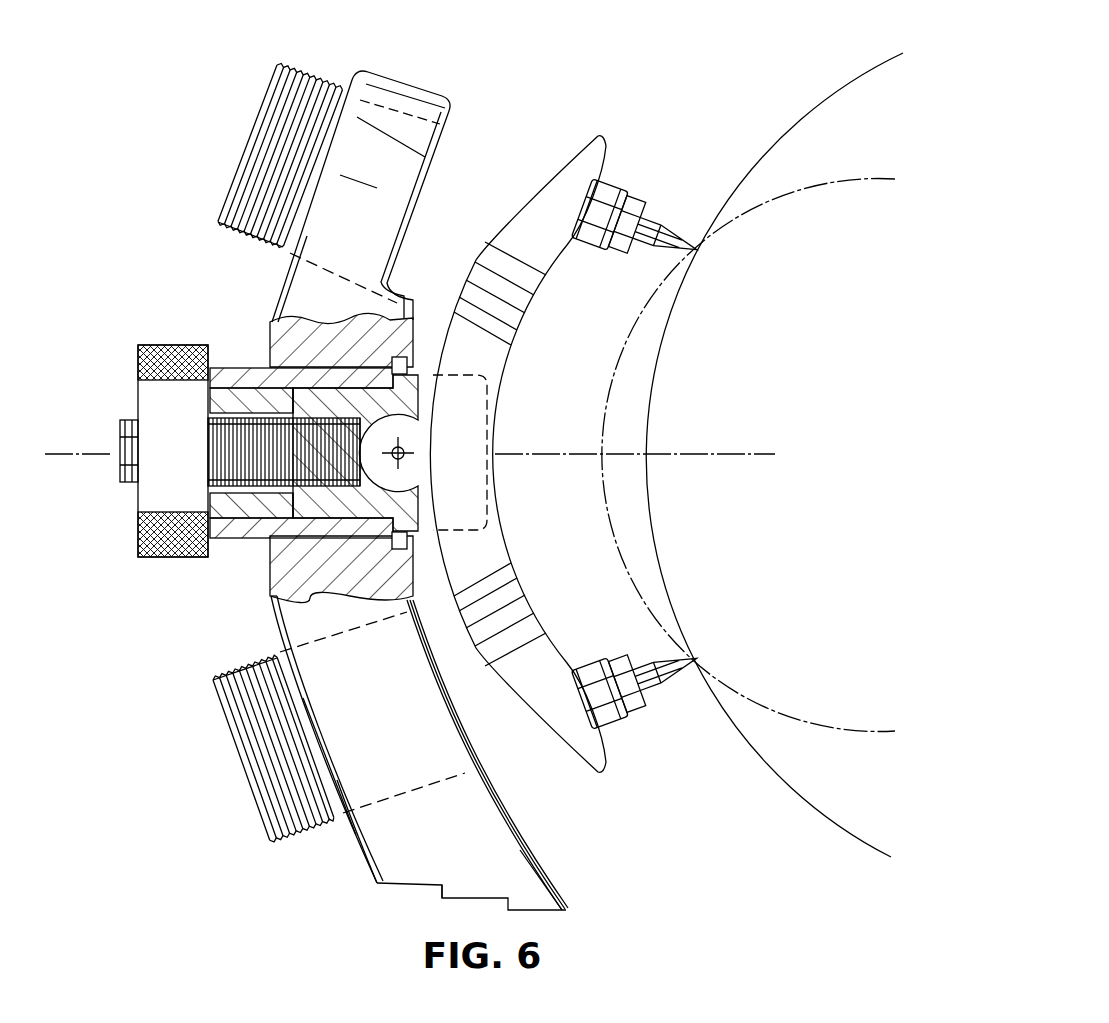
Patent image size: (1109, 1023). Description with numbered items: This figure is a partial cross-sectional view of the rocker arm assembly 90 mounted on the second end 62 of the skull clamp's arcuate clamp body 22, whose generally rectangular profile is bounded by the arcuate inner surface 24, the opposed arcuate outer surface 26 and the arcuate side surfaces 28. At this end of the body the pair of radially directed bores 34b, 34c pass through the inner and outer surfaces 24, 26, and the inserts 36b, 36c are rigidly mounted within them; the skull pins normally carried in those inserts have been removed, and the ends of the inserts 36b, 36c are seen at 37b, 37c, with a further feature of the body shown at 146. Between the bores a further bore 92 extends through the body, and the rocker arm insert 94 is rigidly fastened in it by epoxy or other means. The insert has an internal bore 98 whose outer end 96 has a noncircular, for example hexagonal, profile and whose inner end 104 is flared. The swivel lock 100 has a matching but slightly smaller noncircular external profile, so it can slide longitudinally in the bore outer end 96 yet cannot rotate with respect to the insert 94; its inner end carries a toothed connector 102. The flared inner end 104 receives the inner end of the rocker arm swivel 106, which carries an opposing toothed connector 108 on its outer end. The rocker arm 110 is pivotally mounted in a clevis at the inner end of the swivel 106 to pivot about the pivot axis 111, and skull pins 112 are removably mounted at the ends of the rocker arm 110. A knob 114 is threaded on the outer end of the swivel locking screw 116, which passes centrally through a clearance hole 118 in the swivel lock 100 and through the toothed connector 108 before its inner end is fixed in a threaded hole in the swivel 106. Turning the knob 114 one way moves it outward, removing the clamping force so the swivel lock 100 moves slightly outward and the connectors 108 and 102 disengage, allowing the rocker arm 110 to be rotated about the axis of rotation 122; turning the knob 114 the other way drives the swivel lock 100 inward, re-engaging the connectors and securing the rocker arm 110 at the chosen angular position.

The clamp body 22 is at (493, 804).
The inner surface 24 is at (520, 852).
The outer surface 26 is at (356, 853).
The side surfaces 28 is at (436, 860).
The bore 34b is at (338, 268).
The bore 34c is at (395, 796).
The insert 36b is at (244, 163).
The insert 36c is at (250, 785).
The rod end 37b is at (252, 238).
The rod end 37c is at (228, 673).
The second end 62 is at (321, 445).
The rocker arm assembly 90 is at (656, 152).
The bore 92 is at (292, 385).
The rocker arm insert 94 is at (262, 520).
The outer end 96 is at (212, 404).
The internal bore 98 is at (216, 436).
The swivel lock 100 is at (228, 522).
The toothed connector 102 is at (295, 520).
The inner end 104 is at (320, 538).
The rocker arm swivel 106 is at (366, 514).
The toothed connector 108 is at (276, 378).
The rocker arm 110 is at (548, 644).
The pivot axis 111 is at (405, 448).
The skull pins 112 is at (645, 220).
The knob 114 is at (140, 392).
The swivel locking screw 116 is at (326, 468).
The clearance hole 118 is at (256, 466).
The axis of rotation 122 is at (672, 455).
The ring flange 146 is at (281, 634).